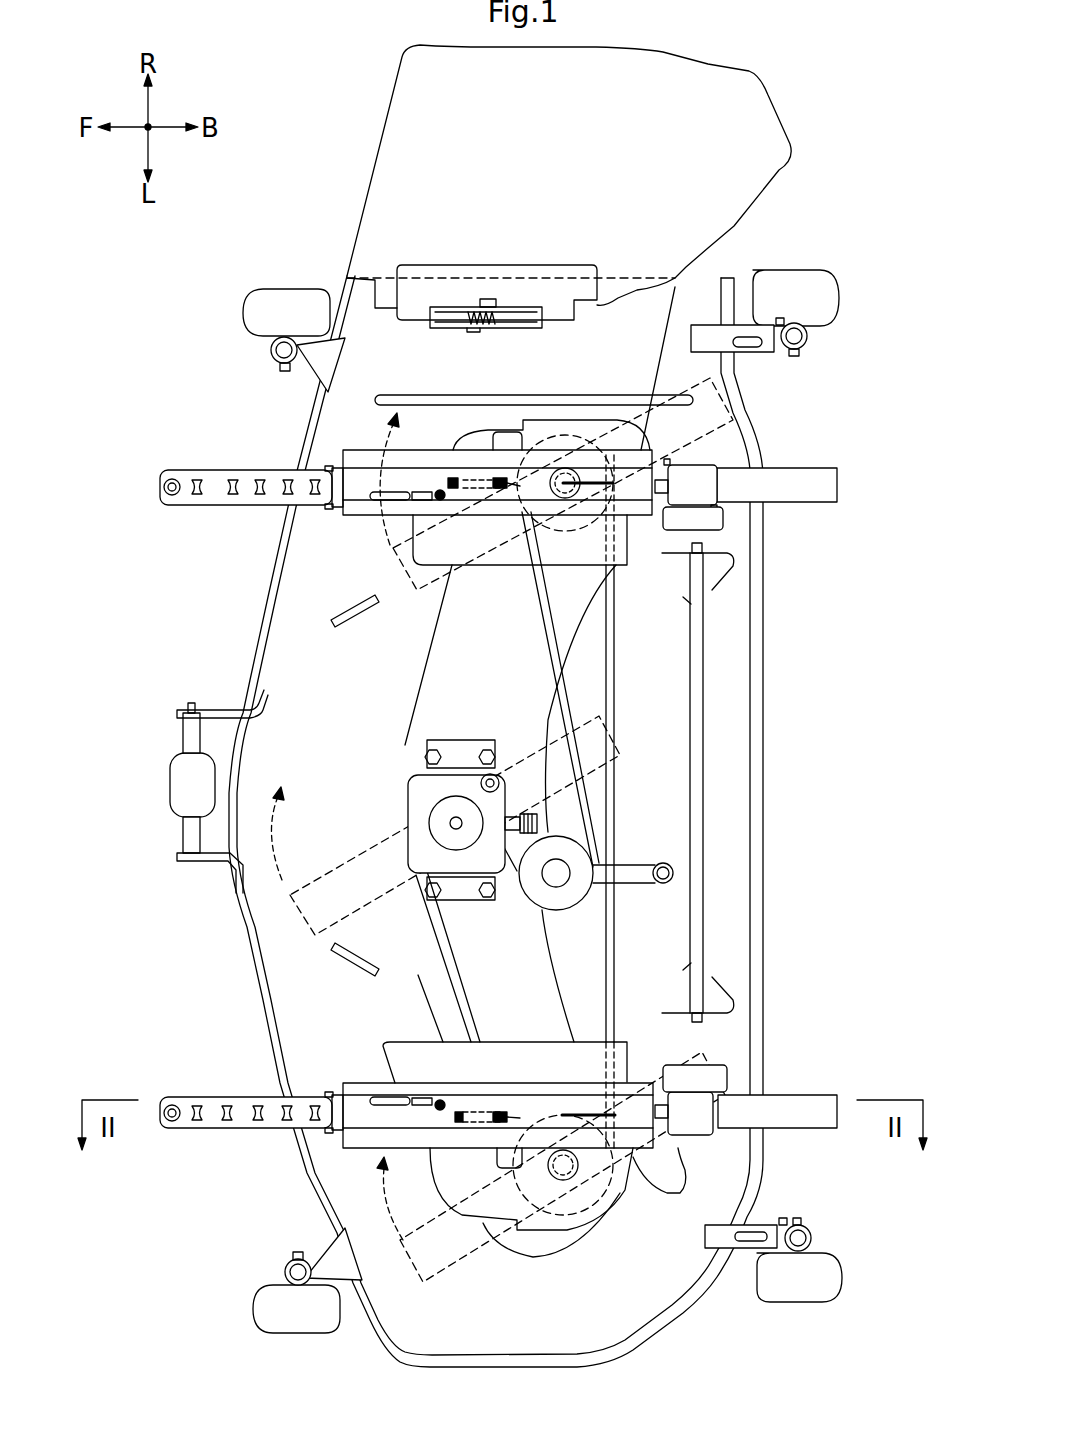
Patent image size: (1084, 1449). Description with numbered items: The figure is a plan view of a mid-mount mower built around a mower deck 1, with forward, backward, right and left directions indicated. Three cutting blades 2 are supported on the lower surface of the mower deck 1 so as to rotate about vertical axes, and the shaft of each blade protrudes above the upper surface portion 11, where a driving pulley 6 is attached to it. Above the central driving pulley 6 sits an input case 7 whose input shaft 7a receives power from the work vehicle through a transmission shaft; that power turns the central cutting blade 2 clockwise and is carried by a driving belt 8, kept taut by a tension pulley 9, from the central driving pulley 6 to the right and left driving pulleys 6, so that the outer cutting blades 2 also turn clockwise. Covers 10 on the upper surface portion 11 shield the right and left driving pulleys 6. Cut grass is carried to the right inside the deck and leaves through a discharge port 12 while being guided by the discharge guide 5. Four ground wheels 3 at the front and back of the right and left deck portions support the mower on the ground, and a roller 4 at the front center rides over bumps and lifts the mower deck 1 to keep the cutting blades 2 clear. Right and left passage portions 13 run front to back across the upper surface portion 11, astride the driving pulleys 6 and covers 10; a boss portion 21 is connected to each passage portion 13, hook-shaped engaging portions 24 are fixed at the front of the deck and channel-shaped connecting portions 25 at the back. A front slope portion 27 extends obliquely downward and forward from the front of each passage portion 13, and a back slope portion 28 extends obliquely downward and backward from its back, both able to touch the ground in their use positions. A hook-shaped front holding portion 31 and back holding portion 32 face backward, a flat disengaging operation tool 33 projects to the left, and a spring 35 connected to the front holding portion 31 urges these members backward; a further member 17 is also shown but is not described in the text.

The mower deck 1 is at (770, 870).
The cutting blade 2 is at (398, 582).
The ground wheel 3 is at (262, 316).
The roller 4 is at (190, 787).
The discharge guide 5 is at (752, 128).
The driving pulley 6 is at (566, 440).
The input case 7 is at (410, 787).
The input shaft 7a is at (540, 826).
The driving belt 8 is at (562, 702).
The tension pulley 9 is at (545, 888).
The cover 10 is at (503, 553).
The upper surface portion 11 is at (670, 938).
The discharge port 12 is at (531, 268).
The passage portion 13 is at (485, 528).
The support bracket 17 is at (688, 488).
The boss portion 21 is at (663, 548).
The engaging portion 24 is at (397, 505).
The connecting portion 25 is at (725, 520).
The front slope portion 27 is at (217, 480).
The back slope portion 28 is at (805, 482).
The front holding portion 31 is at (442, 478).
The back holding portion 32 is at (598, 478).
The disengaging operation tool 33 is at (528, 438).
The spring 35 is at (460, 476).